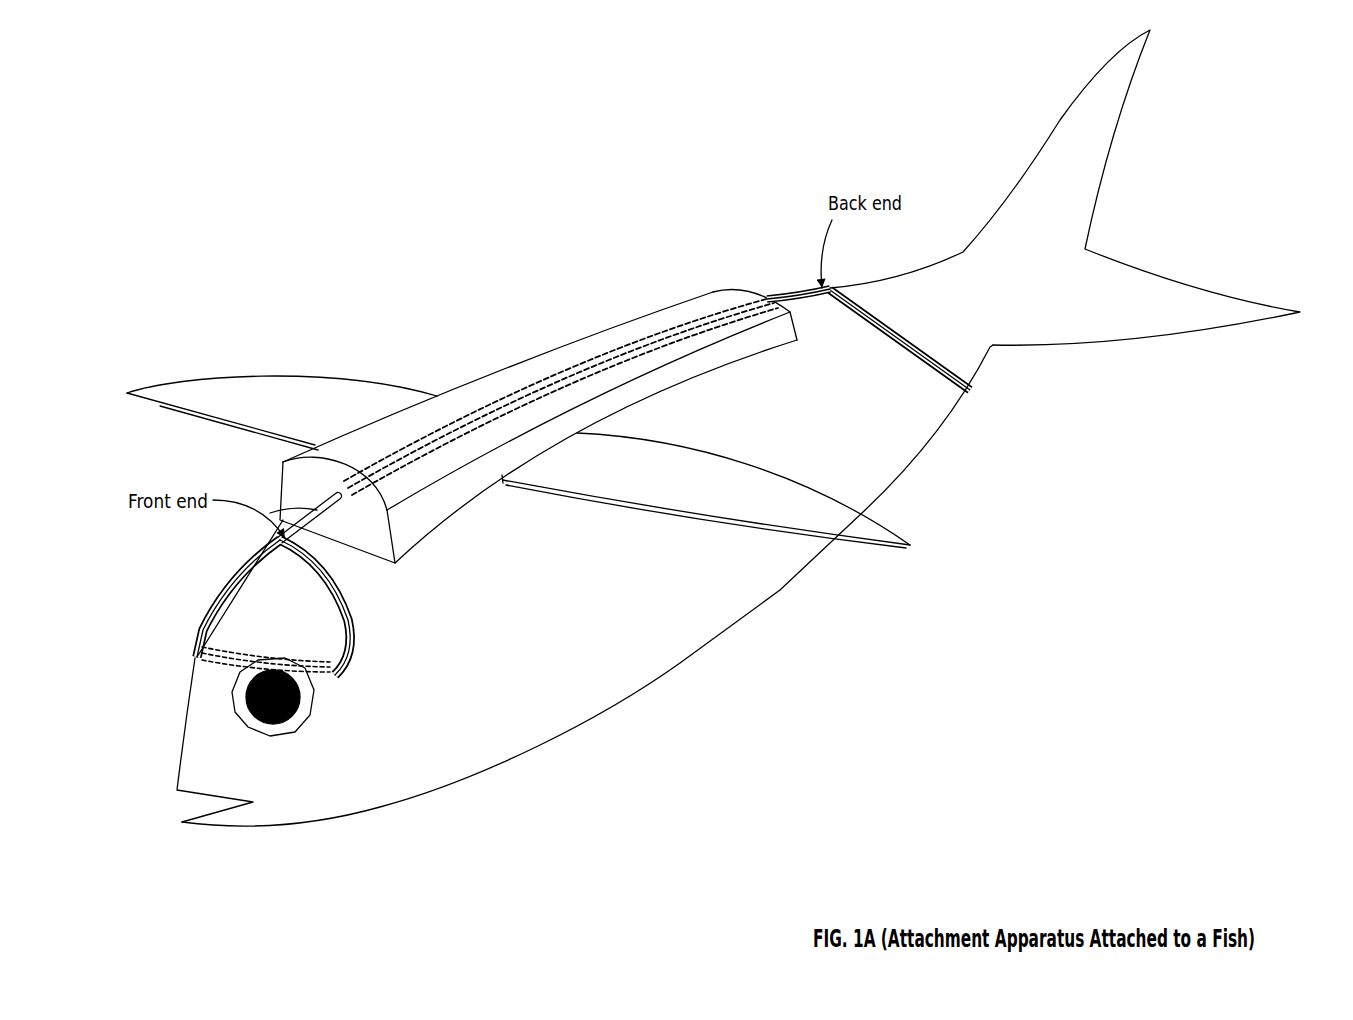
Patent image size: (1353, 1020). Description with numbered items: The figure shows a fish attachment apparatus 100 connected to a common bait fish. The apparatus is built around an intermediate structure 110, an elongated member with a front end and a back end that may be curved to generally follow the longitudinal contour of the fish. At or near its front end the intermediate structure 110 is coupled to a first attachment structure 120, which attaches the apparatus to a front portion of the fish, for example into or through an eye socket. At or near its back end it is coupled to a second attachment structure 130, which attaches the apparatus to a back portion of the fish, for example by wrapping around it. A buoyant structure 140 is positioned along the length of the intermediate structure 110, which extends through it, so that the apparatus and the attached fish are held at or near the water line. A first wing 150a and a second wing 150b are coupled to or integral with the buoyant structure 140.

The fish attachment apparatus 100 is at (253, 107).
The intermediate structure 110 is at (400, 463).
The first attachment structure 120 is at (353, 653).
The second attachment structure 130 is at (905, 348).
The buoyant structure 140 is at (603, 333).
The first wing 150a is at (247, 398).
The second wing 150b is at (827, 523).